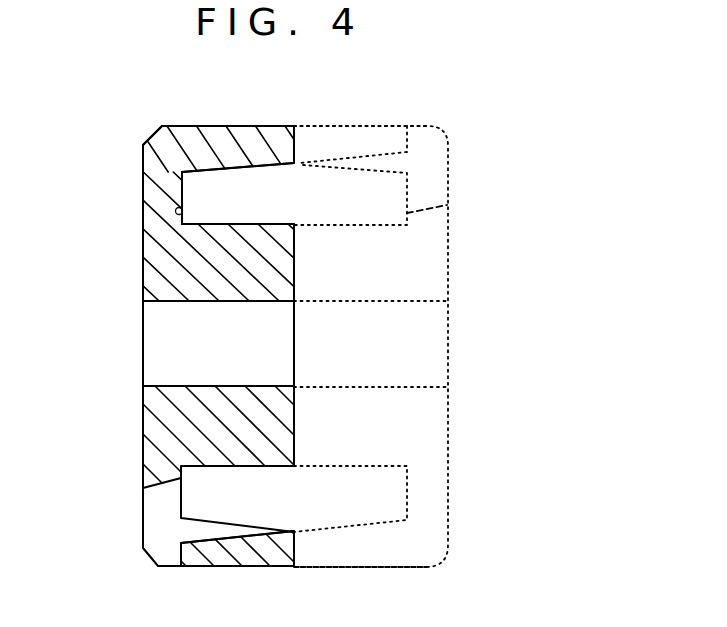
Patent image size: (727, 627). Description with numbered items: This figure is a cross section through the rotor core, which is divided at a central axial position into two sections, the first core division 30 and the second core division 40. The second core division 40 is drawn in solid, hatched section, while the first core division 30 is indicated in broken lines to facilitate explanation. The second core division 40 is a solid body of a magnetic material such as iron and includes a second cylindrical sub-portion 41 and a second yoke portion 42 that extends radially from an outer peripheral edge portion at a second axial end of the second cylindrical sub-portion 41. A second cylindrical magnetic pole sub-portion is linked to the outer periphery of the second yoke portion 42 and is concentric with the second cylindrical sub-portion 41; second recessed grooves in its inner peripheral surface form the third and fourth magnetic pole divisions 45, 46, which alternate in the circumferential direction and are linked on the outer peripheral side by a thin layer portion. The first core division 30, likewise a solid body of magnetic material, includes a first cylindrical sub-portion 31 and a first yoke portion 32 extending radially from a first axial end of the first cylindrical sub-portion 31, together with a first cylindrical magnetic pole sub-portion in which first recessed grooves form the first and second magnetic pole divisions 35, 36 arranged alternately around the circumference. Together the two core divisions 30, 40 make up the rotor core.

The first core division 30 is at (452, 133).
The first cylindrical sub-portion 31 is at (378, 265).
The first yoke portion 32 is at (428, 487).
The first magnetic pole division 35 is at (358, 552).
The second magnetic pole division 36 is at (355, 142).
The second core division 40 is at (142, 133).
The second cylindrical sub-portion 41 is at (217, 258).
The second yoke portion 42 is at (160, 197).
The third magnetic pole division 45 is at (215, 142).
The fourth magnetic pole division 46 is at (220, 566).